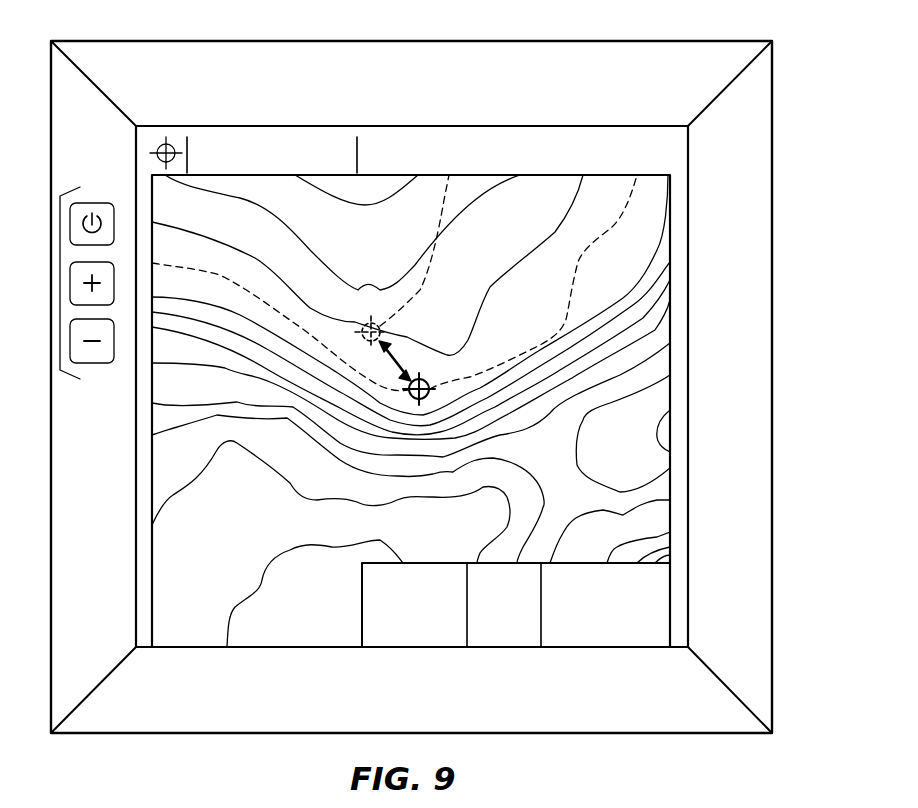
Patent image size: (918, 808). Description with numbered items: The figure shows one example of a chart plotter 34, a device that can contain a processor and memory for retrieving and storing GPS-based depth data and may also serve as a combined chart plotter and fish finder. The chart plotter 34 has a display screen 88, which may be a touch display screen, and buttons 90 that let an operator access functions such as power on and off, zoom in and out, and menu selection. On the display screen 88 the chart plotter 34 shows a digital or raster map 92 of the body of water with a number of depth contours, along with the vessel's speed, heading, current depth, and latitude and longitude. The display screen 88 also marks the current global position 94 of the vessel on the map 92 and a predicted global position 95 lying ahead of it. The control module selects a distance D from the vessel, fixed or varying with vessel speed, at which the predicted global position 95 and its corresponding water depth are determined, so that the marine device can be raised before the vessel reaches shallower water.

The chart plotter 34 is at (772, 117).
The display screen 88 is at (690, 348).
The buttons 90 is at (60, 281).
The map 92 is at (672, 465).
The global position of the vessel 94 is at (411, 394).
The predicted global position of the vessel 95 is at (449, 175).
The distance D is at (398, 358).